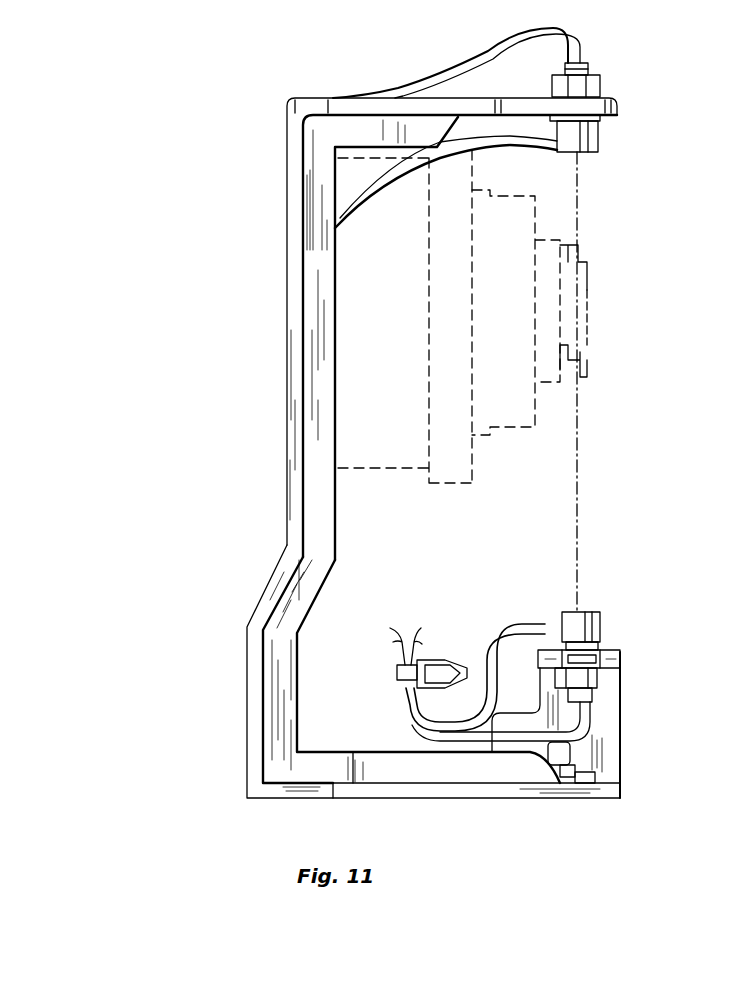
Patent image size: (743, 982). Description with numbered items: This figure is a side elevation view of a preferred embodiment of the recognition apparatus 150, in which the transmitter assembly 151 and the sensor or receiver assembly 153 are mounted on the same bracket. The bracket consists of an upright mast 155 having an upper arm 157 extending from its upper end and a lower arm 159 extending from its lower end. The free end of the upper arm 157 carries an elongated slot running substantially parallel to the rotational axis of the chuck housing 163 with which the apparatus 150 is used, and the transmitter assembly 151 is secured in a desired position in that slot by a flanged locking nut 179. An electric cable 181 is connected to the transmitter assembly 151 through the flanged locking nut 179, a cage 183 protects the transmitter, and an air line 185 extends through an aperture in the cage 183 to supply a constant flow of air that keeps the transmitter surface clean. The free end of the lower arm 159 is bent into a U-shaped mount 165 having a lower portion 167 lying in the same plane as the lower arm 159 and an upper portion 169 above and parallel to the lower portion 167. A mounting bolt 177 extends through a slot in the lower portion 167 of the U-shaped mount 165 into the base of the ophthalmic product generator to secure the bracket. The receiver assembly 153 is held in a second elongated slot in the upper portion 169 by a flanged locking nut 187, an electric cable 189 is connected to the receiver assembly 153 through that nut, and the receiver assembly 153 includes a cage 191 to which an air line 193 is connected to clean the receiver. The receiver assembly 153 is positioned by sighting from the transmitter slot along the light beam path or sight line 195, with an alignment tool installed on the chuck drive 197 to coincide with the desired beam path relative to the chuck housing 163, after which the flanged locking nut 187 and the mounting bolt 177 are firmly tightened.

The recognition apparatus 150 is at (276, 369).
The transmitter assembly 151 is at (613, 130).
The receiver assembly 153 is at (616, 608).
The mast 155 is at (298, 412).
The upper arm 157 is at (388, 105).
The lower arm 159 is at (300, 790).
The chuck housing 163 is at (372, 282).
The U-shaped mount 165 is at (607, 715).
The lower portion 167 is at (585, 792).
The upper portion 169 is at (610, 657).
The mounting bolt 177 is at (572, 750).
The flanged locking nut 179 is at (593, 77).
The electric cable 181 is at (470, 57).
The cage 183 is at (578, 155).
The air line 185 is at (487, 152).
The flanged locking nut 187 is at (605, 686).
The electric cable 189 is at (422, 737).
The cage 191 is at (560, 610).
The air line 193 is at (510, 625).
The sight line 195 is at (578, 500).
The chuck drive 197 is at (585, 307).